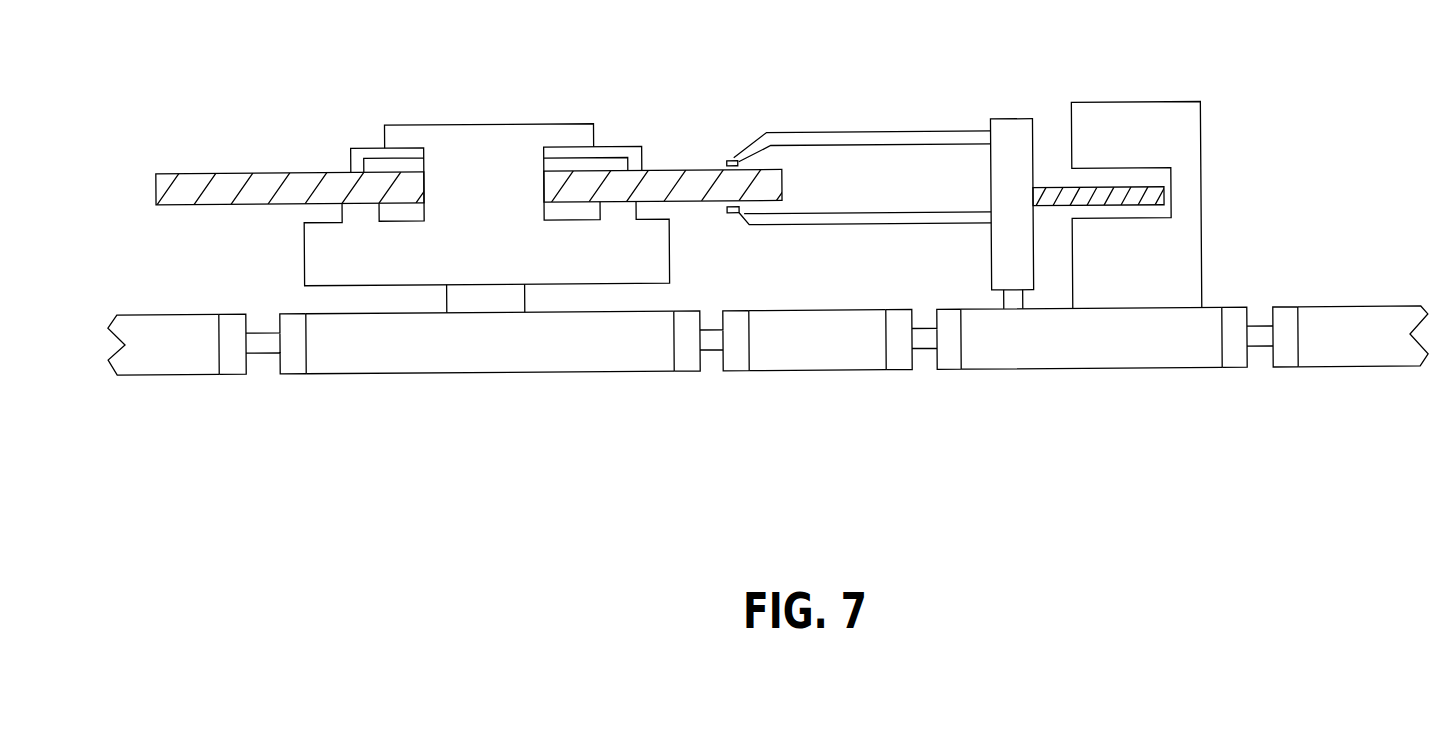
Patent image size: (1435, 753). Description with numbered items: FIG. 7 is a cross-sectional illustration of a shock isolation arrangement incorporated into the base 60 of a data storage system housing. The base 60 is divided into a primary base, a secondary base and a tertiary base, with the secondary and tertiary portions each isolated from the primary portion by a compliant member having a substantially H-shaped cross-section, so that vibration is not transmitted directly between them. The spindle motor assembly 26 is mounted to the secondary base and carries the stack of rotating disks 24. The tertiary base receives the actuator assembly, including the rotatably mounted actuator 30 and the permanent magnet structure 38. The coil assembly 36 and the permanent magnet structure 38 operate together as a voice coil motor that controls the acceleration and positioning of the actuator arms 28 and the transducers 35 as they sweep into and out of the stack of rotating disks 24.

The rotating disks 24 is at (248, 173).
The spindle motor assembly 26 is at (552, 124).
The actuator arms 28 is at (813, 133).
The actuator 30 is at (1003, 120).
The transducers 35 is at (732, 160).
The coil assembly 36 is at (1159, 200).
The permanent magnet structure 38 is at (1155, 103).
The base 60 is at (768, 294).